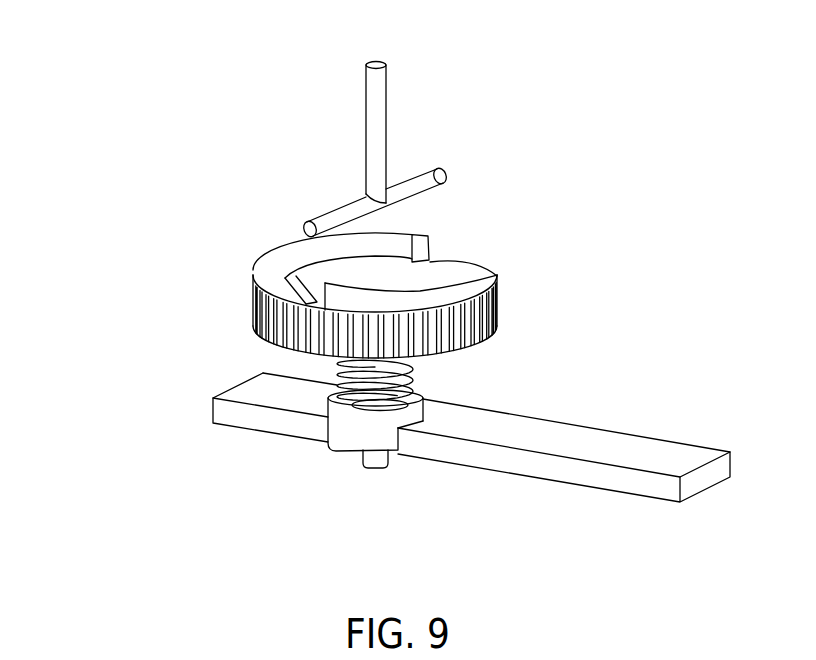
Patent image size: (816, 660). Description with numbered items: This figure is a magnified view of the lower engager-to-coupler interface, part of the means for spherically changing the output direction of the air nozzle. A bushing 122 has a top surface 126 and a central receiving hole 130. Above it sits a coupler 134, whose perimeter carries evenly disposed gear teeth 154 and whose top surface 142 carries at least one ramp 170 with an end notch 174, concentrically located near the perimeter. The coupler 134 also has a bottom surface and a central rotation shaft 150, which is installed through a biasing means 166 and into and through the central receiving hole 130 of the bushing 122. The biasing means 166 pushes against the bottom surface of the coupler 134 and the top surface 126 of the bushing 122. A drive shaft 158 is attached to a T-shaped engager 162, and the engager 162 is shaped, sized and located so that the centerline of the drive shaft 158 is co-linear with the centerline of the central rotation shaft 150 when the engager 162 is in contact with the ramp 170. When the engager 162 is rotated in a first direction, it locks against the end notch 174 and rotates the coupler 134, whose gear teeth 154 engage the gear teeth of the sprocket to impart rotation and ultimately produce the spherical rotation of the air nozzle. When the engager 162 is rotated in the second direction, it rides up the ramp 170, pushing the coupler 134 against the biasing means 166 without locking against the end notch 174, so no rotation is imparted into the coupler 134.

The bushing 122 is at (357, 437).
The top surface 126 is at (425, 395).
The central receiving hole 130 is at (327, 410).
The coupler 134 is at (440, 272).
The top surface 142 is at (430, 259).
The central rotation shaft 150 is at (412, 382).
The gear teeth 154 is at (254, 310).
The drive shaft 158 is at (378, 102).
The engager 162 is at (442, 177).
The biasing means 166 is at (338, 374).
The ramp 170 is at (287, 256).
The end notch 174 is at (432, 240).